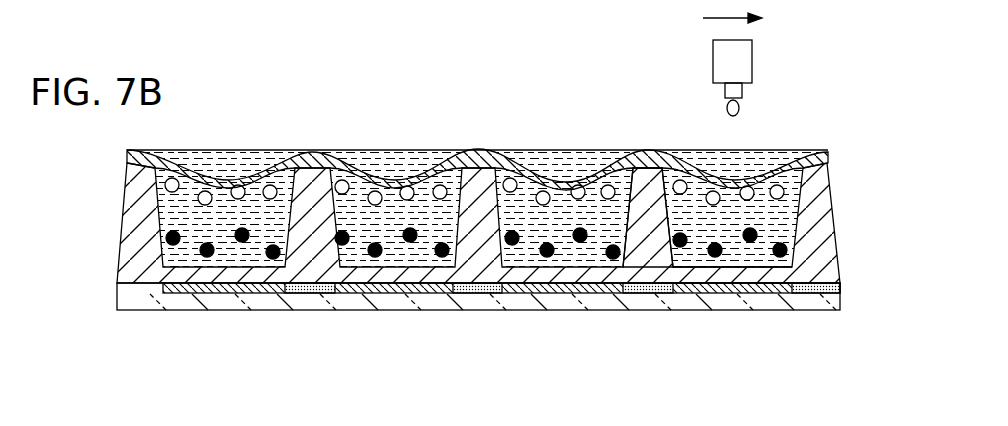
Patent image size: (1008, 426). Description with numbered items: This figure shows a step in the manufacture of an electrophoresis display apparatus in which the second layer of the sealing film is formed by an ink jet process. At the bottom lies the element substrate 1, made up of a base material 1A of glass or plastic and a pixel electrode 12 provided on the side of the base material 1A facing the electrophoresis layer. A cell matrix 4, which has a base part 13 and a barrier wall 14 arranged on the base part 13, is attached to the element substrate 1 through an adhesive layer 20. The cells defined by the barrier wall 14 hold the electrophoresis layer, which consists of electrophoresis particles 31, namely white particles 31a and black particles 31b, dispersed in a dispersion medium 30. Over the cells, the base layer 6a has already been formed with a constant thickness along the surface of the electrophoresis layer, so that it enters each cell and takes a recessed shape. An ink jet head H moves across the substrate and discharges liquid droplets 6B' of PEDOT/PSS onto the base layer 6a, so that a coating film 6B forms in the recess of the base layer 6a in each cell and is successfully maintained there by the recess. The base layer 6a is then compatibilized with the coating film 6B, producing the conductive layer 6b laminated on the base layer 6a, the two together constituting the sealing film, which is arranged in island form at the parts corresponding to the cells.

The element substrate 1 is at (112, 283).
The base material 1A is at (265, 300).
The pixel electrode 12 is at (180, 294).
The adhesive layer 20 is at (638, 295).
The cell matrix 4 is at (705, 106).
The base part 13 is at (705, 277).
The barrier wall 14 is at (645, 175).
The dispersion medium 30 is at (348, 253).
The electrophoresis particles 31 is at (476, 284).
The white particles 31a is at (445, 196).
The black particles 31b is at (410, 237).
The base layer 6a is at (830, 155).
The coating film 6B is at (477, 140).
The conductive layer 6b is at (393, 162).
The liquid droplets 6B' is at (763, 97).
The ink jet head H is at (733, 63).